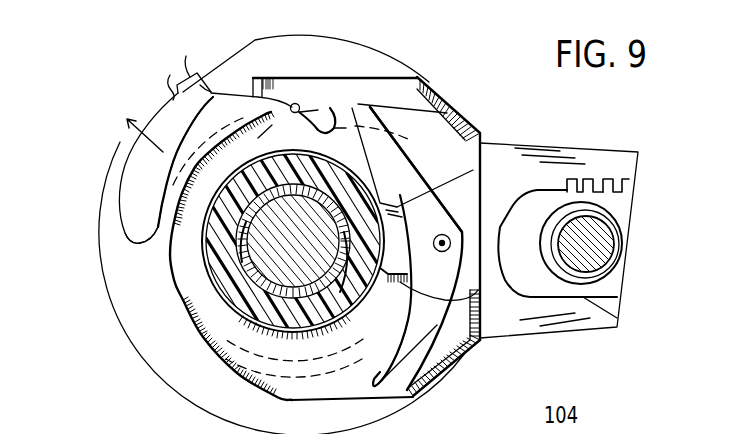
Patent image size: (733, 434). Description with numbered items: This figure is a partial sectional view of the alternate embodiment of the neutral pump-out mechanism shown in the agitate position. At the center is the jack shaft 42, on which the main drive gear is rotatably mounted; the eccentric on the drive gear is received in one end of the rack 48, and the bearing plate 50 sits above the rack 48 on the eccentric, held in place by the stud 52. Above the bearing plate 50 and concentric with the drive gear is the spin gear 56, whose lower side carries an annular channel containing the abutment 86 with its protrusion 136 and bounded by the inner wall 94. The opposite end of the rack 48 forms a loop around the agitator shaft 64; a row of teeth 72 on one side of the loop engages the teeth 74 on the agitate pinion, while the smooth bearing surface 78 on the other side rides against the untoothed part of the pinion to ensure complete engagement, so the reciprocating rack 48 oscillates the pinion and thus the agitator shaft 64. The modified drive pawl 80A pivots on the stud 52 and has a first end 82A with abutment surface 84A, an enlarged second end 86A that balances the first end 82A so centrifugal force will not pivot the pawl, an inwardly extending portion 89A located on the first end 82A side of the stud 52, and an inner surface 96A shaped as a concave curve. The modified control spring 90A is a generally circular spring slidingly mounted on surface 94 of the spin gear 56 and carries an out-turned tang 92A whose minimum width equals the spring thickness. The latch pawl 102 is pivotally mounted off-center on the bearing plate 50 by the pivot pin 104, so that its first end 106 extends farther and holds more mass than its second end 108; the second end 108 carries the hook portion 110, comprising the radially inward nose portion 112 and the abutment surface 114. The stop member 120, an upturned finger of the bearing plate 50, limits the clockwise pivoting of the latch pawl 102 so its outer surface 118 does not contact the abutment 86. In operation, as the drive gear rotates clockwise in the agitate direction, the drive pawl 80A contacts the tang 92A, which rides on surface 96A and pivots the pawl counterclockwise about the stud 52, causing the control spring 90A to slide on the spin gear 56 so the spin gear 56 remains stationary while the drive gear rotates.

The jack shaft 42 is at (272, 256).
The rack 48 is at (545, 167).
The bearing plate 50 is at (243, 352).
The stud 52 is at (451, 243).
The spin gear 56 is at (246, 41).
The agitator shaft 64 is at (608, 245).
The rack teeth 72 is at (617, 175).
The agitate pinion teeth 74 is at (587, 175).
The smooth bearing surface 78 is at (617, 318).
The modified drive pawl 80A is at (480, 344).
The first end of drive pawl 82A is at (462, 110).
The abutment surface 84A is at (373, 107).
The abutment 86 is at (170, 75).
The second end of drive pawl 86A is at (372, 380).
The inwardly extending portion 89A is at (482, 172).
The modified control spring 90A is at (243, 300).
The out-turned tang 92A is at (472, 285).
The inner wall 94 is at (397, 207).
The inner surface of drive pawl 96A is at (405, 316).
The latch pawl 102 is at (142, 150).
The pivot pin 104 is at (296, 103).
The first end of latch pawl 106 is at (127, 241).
The second end of latch pawl 108 is at (330, 98).
The hook portion 110 is at (332, 112).
The nose portion 112 is at (336, 109).
The abutment surface of hook 114 is at (313, 131).
The outer surface of latch pawl 118 is at (200, 85).
The stop member 120 is at (270, 77).
The protrusion 136 is at (186, 56).